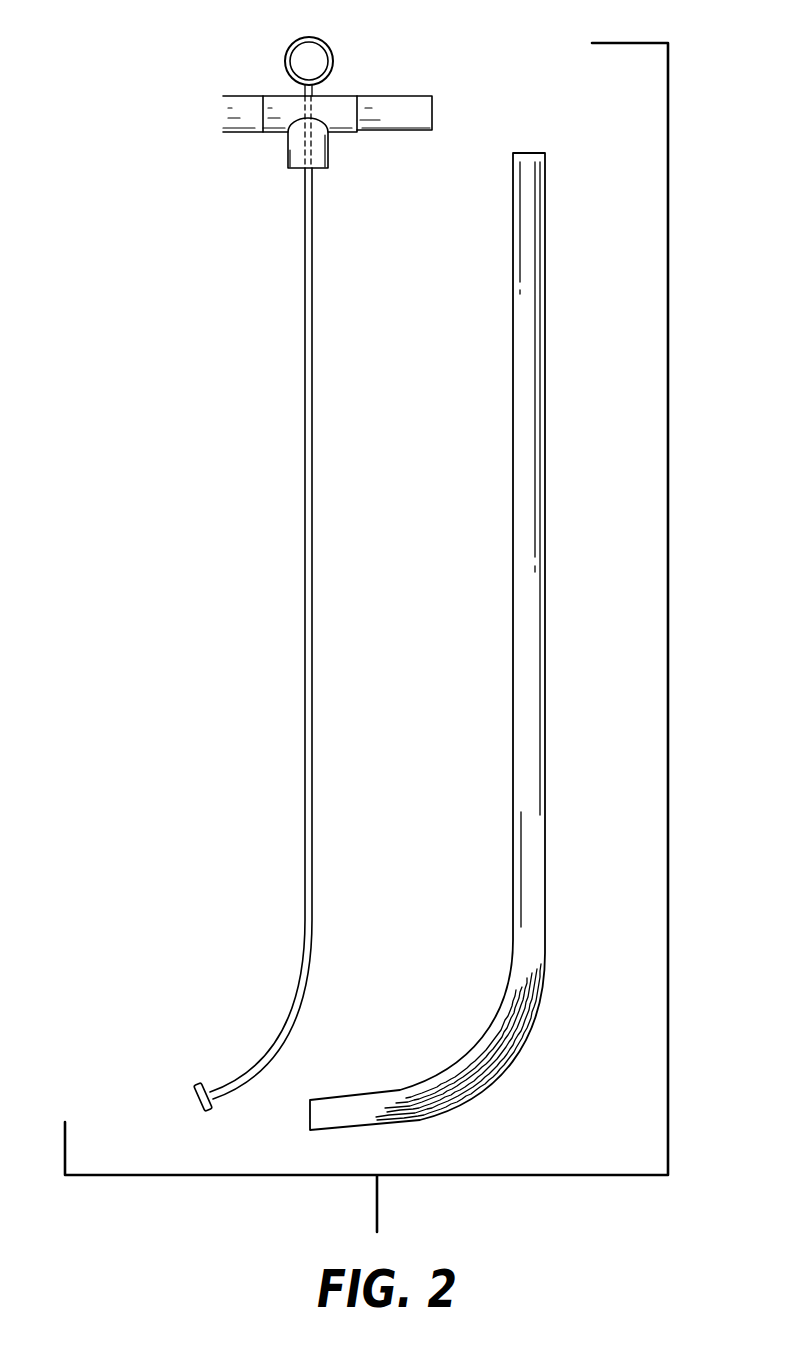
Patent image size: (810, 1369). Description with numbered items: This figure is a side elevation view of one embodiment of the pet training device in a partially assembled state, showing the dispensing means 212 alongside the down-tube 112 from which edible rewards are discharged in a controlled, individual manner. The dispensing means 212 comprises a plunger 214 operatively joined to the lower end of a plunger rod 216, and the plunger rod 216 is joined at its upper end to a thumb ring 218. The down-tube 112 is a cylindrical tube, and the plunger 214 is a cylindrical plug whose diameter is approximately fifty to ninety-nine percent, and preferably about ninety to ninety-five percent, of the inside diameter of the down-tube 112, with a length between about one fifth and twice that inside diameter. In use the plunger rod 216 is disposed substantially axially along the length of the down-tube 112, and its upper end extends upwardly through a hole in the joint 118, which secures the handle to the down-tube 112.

The down-tube 112 is at (543, 590).
The joint 118 is at (287, 132).
The dispensing means 212 is at (272, 576).
The plunger 214 is at (195, 1093).
The plunger rod 216 is at (306, 372).
The thumb ring 218 is at (286, 58).